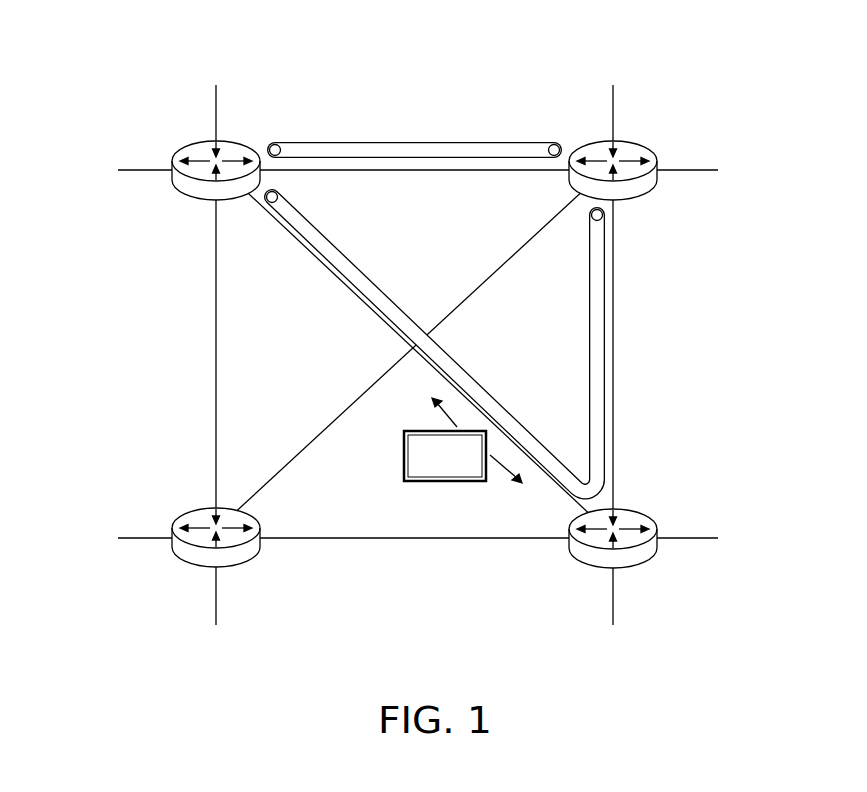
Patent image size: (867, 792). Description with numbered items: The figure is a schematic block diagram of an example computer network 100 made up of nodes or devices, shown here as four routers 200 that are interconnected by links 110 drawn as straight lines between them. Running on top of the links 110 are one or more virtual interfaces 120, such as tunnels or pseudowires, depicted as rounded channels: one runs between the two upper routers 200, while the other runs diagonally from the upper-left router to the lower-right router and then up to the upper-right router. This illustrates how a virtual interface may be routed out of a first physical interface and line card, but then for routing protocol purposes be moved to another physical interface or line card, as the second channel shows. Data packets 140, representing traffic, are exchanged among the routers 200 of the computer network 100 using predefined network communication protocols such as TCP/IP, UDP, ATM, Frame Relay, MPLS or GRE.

The computer network 100 is at (413, 339).
The links 110 is at (615, 445).
The virtual interfaces 120 is at (403, 306).
The data packets 140 is at (467, 469).
The routers 200 is at (192, 560).